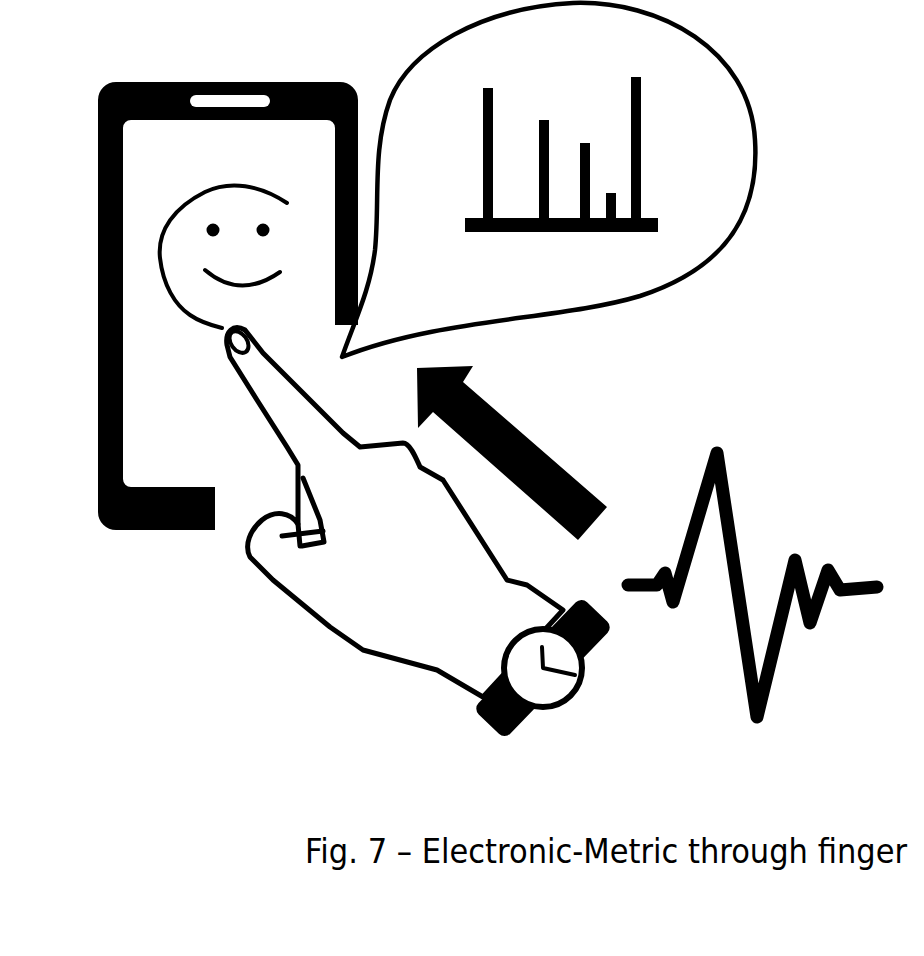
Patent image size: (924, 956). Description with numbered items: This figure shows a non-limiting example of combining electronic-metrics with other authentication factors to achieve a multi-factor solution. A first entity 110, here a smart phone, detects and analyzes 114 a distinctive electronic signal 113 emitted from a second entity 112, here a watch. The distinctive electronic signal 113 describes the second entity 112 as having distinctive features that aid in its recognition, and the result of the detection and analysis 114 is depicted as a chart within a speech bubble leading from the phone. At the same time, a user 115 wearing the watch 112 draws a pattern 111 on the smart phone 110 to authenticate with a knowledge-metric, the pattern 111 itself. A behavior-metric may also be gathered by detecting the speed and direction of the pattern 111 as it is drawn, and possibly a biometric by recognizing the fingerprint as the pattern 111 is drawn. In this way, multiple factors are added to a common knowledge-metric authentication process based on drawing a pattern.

The first entity 110 is at (228, 286).
The pattern 111 is at (208, 263).
The second entity 112 is at (492, 668).
The distinctive electronic signal 113 is at (752, 585).
The detect and analyze 114 is at (548, 180).
The user 115 is at (372, 512).